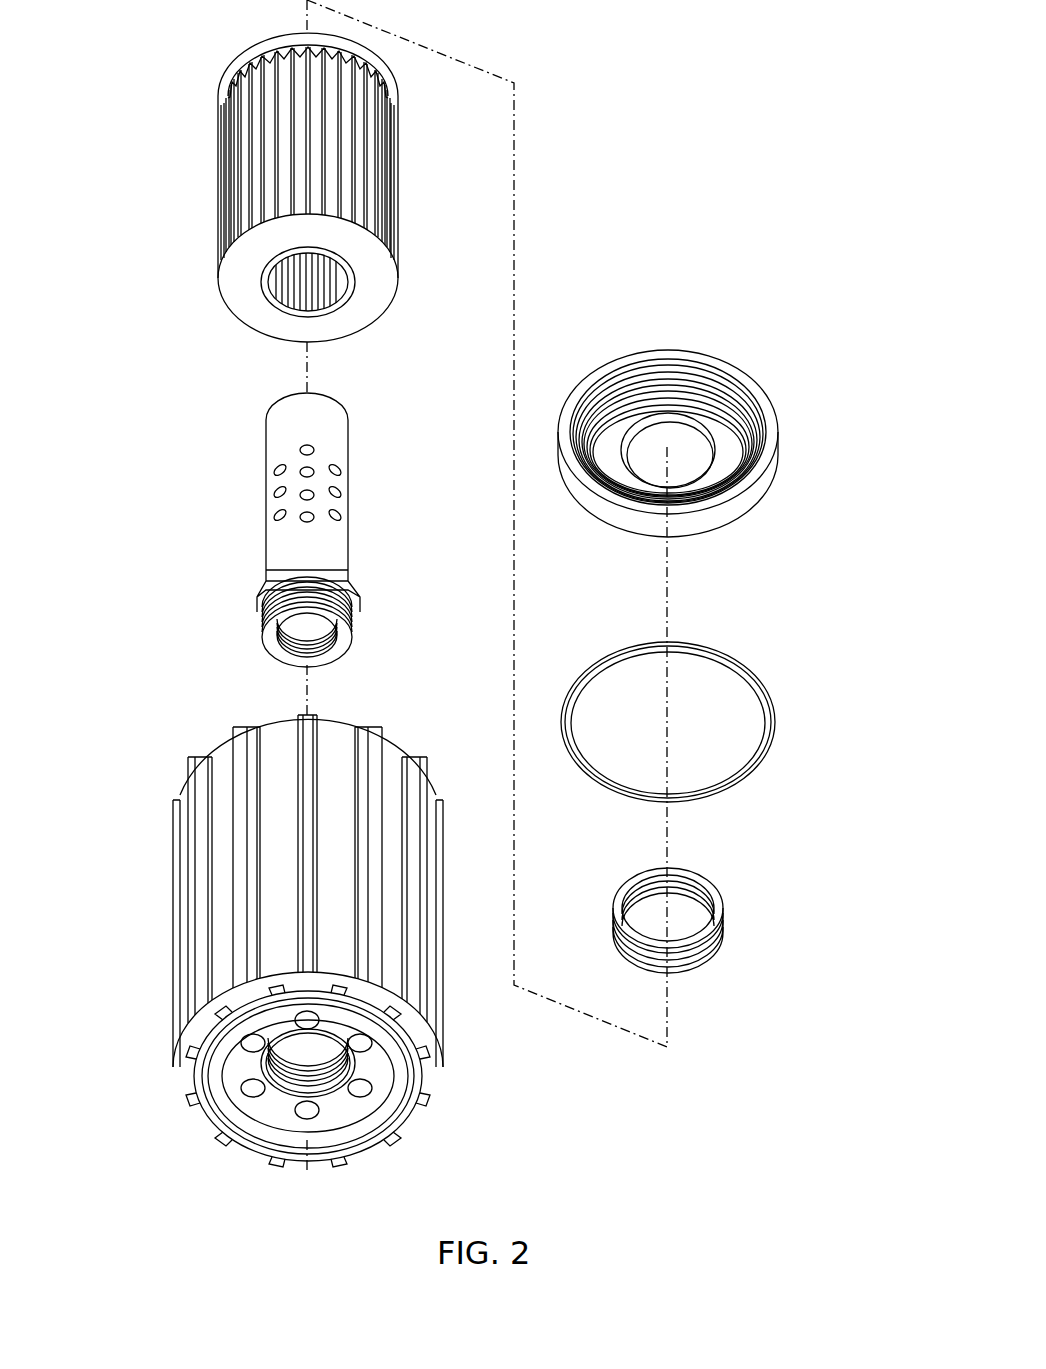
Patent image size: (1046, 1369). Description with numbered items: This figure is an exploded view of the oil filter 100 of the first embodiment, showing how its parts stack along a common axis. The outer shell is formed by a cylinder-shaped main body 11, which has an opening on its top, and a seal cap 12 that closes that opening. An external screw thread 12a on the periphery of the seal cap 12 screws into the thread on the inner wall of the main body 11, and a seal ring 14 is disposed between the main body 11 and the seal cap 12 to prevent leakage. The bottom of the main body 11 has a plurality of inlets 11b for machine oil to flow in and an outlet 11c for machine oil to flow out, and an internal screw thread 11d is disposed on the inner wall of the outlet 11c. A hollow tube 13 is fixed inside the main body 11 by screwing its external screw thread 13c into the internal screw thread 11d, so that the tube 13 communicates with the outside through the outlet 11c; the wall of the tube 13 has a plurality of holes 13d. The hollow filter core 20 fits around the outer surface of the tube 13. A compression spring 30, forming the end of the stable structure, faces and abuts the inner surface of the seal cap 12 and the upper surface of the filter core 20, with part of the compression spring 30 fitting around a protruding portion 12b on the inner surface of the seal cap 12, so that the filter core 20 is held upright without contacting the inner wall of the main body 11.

The oil filter 100 is at (657, 139).
The main body 11 is at (242, 976).
The inlets 11b is at (302, 1113).
The outlet 11c is at (280, 1087).
The internal screw thread 11d is at (320, 1095).
The seal cap 12 is at (722, 418).
The external screw thread 12a is at (755, 426).
The protruding portion 12b is at (697, 462).
The tube 13 is at (299, 530).
The external screw thread 13c is at (355, 620).
The holes 13d is at (337, 470).
The seal ring 14 is at (772, 710).
The filter core 20 is at (212, 175).
The compression spring 30 is at (722, 900).